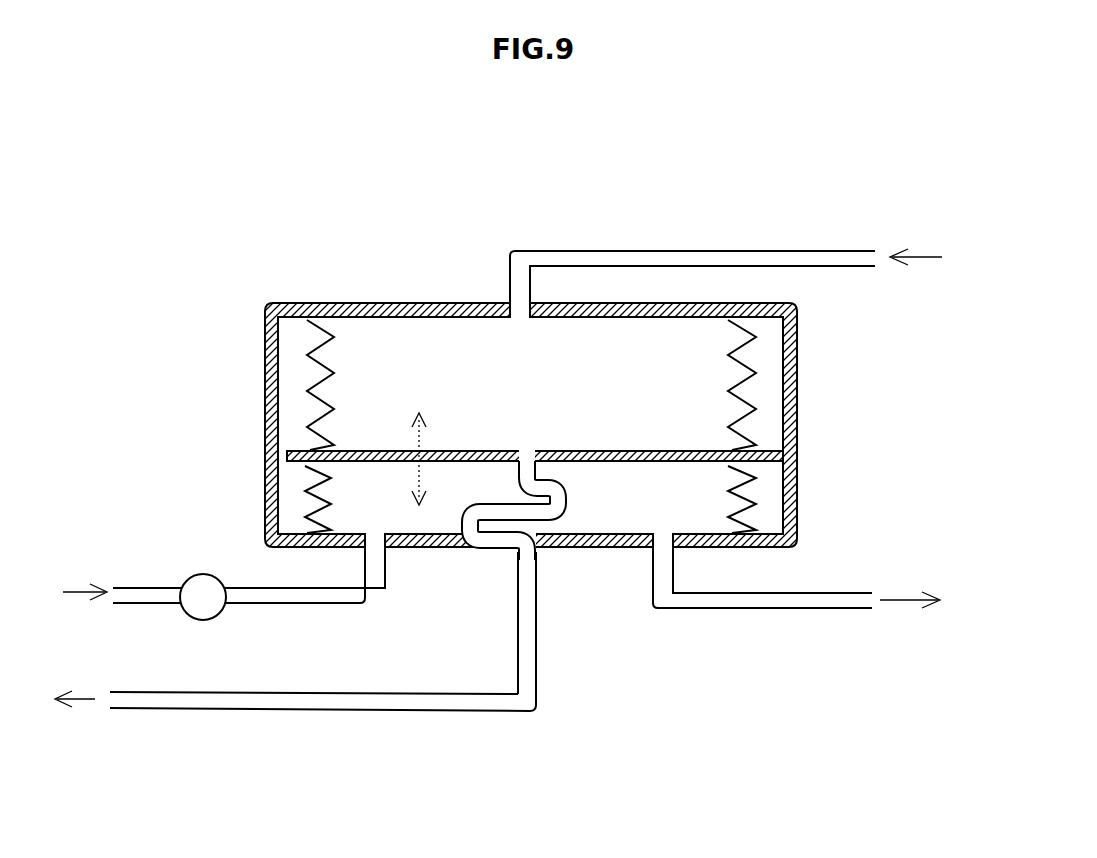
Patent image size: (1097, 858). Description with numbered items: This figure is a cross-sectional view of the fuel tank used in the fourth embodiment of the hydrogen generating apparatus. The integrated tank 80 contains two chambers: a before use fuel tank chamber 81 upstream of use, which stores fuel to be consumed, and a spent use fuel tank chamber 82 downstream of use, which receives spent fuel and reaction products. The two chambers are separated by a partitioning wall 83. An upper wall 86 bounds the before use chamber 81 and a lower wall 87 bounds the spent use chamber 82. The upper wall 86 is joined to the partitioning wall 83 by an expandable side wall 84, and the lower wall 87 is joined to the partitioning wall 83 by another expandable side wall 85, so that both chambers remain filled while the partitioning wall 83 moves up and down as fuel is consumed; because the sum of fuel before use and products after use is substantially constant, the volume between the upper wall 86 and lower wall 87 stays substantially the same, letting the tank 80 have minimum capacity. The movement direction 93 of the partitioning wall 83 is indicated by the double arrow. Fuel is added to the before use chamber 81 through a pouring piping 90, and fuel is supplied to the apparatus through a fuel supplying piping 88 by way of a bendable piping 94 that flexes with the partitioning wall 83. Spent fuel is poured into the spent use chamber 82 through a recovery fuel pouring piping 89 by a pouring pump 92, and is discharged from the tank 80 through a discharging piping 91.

The integrated tank 80 is at (800, 337).
The before use fuel tank chamber 81 is at (382, 360).
The spent use fuel tank chamber 82 is at (607, 510).
The partitioning wall 83 is at (502, 438).
The expandable side wall 84 is at (310, 413).
The expandable side wall 85 is at (310, 502).
The upper wall 86 is at (498, 322).
The lower wall 87 is at (637, 537).
The fuel supplying piping 88 is at (160, 708).
The recovery fuel pouring piping 89 is at (325, 606).
The pouring piping 90 is at (792, 250).
The discharging piping 91 is at (807, 608).
The pouring pump 92 is at (180, 578).
The direction of partition movement 93 is at (420, 412).
The bendable piping 94 is at (467, 518).